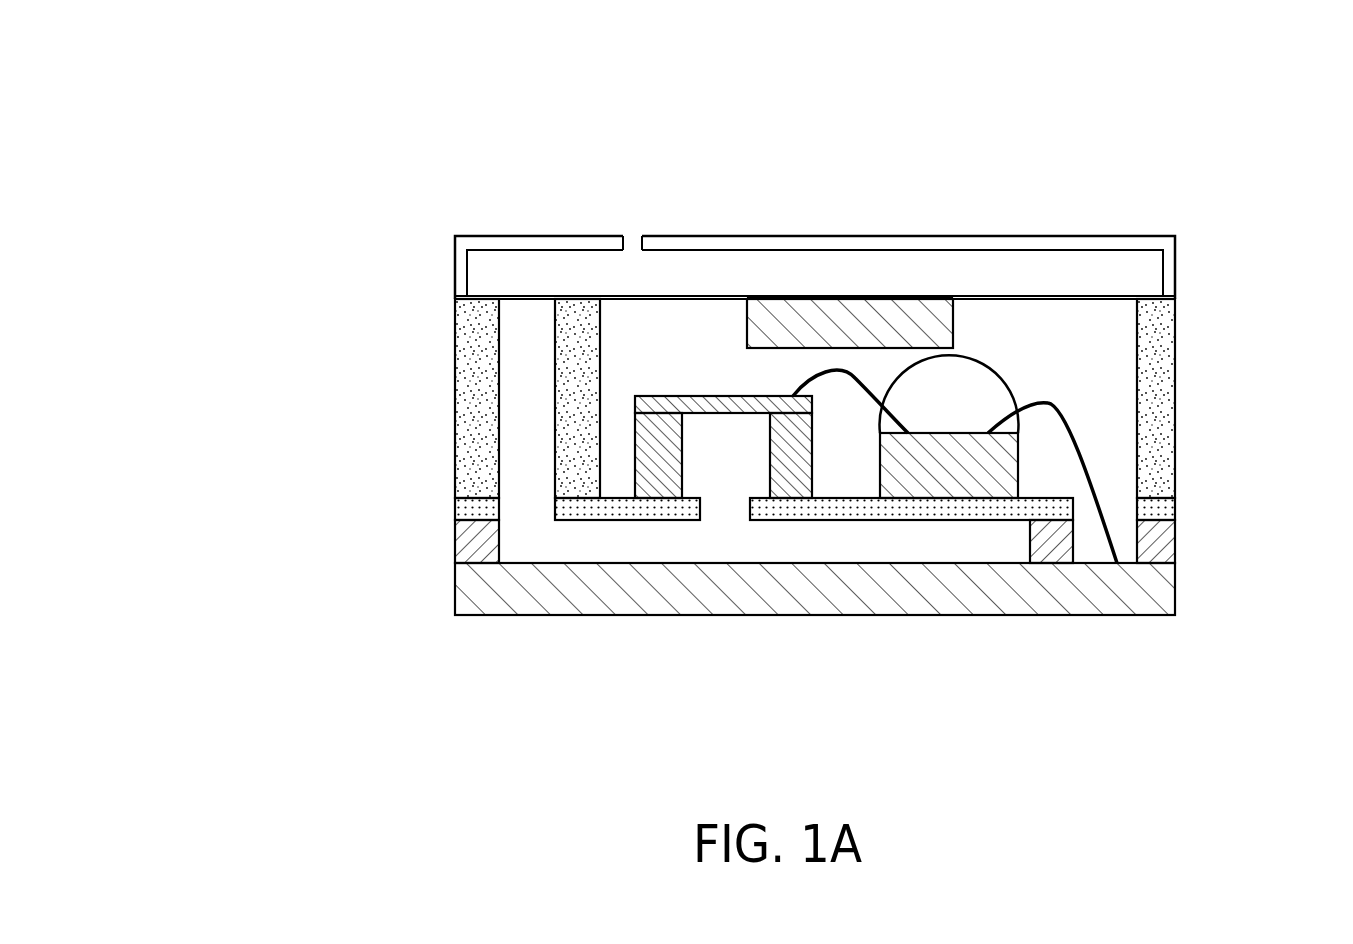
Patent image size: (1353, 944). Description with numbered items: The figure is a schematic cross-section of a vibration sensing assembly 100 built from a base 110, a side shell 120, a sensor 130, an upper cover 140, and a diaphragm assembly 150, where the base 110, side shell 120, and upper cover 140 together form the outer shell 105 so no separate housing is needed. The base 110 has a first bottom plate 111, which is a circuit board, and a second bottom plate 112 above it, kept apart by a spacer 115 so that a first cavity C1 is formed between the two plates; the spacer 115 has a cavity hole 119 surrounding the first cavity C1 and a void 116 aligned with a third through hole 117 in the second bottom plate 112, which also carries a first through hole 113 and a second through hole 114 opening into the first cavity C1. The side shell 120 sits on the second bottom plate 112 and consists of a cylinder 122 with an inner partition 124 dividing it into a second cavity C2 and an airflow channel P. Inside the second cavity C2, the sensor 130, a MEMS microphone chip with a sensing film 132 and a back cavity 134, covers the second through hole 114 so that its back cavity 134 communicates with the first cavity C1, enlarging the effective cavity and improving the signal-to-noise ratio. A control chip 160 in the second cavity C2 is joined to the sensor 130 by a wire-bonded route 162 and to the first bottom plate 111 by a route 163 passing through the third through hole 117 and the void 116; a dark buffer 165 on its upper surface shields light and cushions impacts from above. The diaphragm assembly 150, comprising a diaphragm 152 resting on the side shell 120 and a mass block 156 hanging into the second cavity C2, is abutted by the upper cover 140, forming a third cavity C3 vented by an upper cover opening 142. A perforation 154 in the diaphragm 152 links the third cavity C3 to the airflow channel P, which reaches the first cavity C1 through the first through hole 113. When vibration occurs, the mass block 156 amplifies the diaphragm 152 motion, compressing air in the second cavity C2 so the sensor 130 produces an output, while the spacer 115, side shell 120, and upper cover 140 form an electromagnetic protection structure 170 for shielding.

The vibration sensing assembly 100 is at (402, 193).
The outer shell 105 is at (178, 37).
The base 110 is at (1262, 493).
The first bottom plate 111 is at (1172, 583).
The second bottom plate 112 is at (1172, 510).
The first through hole 113 is at (511, 511).
The second through hole 114 is at (703, 508).
The spacer 115 is at (1172, 543).
The void 116 is at (1075, 543).
The third through hole 117 is at (1078, 512).
The cavity hole 119 is at (510, 528).
The side shell 120 is at (374, 300).
The cylinder 122 is at (480, 333).
The inner partition 124 is at (573, 400).
The sensor 130 is at (723, 332).
The sensing film 132 is at (725, 403).
The back cavity 134 is at (732, 448).
The upper cover 140 is at (1040, 243).
The upper cover opening 142 is at (638, 240).
The diaphragm assembly 150 is at (967, 164).
The diaphragm 152 is at (977, 294).
The perforation 154 is at (502, 296).
The mass block 156 is at (888, 320).
The control chip 160 is at (957, 477).
The route 162 is at (838, 377).
The route 163 is at (1077, 427).
The buffer 165 is at (925, 415).
The electromagnetic protection structure 170 is at (178, 187).
The airflow channel P is at (527, 452).
The first cavity C1 is at (803, 542).
The second cavity C2 is at (1103, 368).
The third cavity C3 is at (1097, 272).